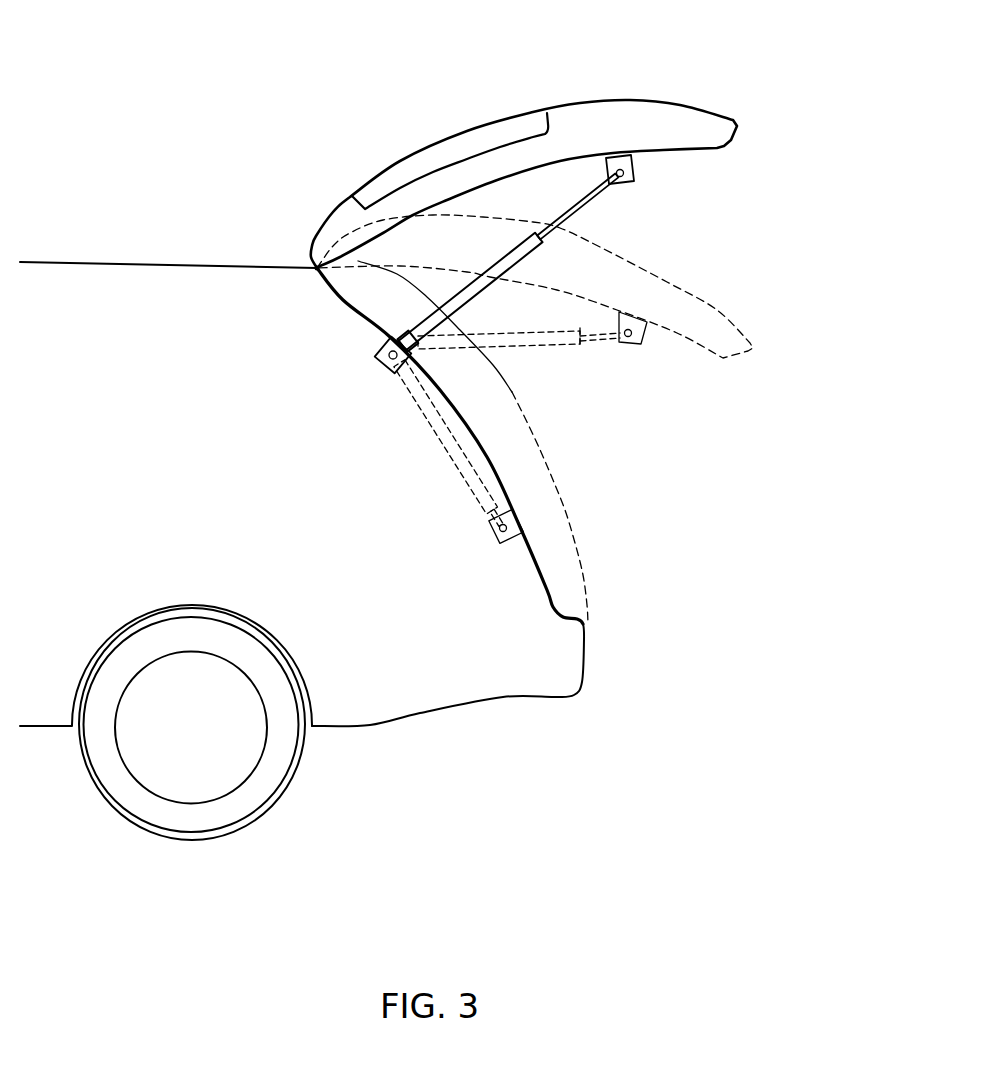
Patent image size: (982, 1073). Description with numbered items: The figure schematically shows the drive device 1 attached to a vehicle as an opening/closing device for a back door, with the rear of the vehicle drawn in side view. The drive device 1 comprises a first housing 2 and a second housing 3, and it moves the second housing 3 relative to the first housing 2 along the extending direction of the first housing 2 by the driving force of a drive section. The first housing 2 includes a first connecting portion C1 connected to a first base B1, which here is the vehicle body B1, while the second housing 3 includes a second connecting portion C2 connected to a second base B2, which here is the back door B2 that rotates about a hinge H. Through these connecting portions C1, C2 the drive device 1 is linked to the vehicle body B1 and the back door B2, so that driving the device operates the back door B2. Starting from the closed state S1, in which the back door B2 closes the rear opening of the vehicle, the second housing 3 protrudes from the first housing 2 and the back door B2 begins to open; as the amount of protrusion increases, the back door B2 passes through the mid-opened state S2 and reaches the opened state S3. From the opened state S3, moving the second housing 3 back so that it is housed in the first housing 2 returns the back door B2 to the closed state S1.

The drive device 1 is at (568, 308).
The first housing 2 is at (483, 290).
The second housing 3 is at (609, 194).
The first base B1 is at (380, 347).
The second base B2 is at (696, 122).
The hinge H is at (317, 262).
The first connecting portion C1 is at (420, 370).
The second connecting portion C2 is at (636, 172).
The closed state S1 is at (586, 553).
The mid-opened state S2 is at (722, 306).
The opened state S3 is at (532, 134).